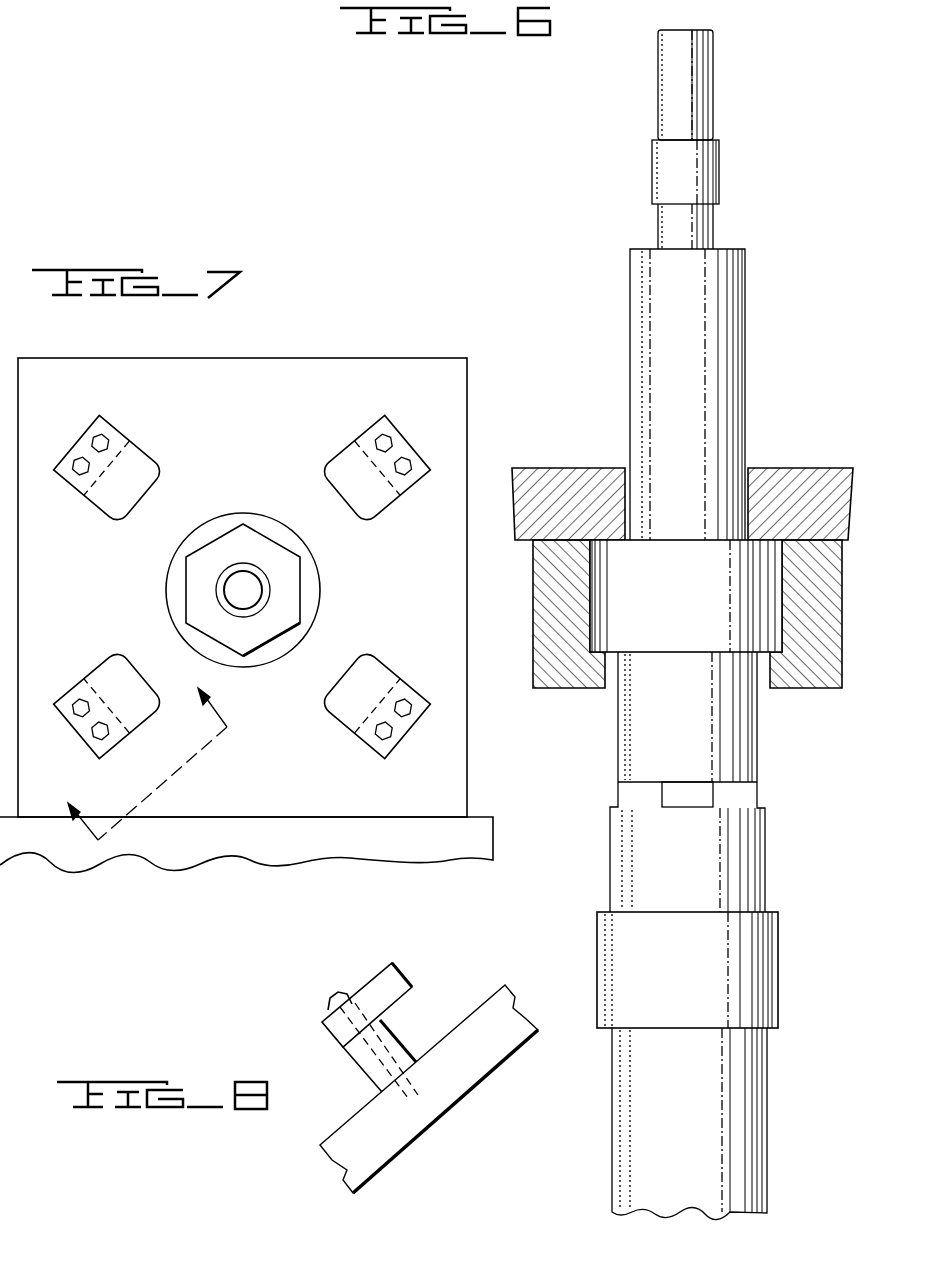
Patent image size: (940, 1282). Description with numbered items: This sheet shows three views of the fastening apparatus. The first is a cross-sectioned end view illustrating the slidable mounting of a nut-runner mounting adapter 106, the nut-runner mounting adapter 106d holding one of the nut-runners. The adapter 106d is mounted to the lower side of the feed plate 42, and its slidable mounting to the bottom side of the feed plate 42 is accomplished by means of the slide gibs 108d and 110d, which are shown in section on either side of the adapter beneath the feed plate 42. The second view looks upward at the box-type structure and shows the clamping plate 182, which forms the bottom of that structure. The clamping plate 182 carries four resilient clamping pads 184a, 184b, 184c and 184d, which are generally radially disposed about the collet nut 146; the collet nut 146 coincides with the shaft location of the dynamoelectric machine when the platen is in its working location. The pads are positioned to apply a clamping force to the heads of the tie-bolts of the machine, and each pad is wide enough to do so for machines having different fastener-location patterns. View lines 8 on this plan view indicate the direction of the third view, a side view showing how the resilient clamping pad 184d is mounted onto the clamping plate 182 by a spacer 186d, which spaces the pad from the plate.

In FIG. 6, the feed plate 42 is at (556, 468).
In FIG. 6, the nut-runner mounting adapter 106 is at (700, 613).
In FIG. 6, the nut-runner mounting adapter 106d is at (765, 862).
In FIG. 6, the slide gib 108d is at (588, 690).
In FIG. 6, the slide gib 110d is at (815, 690).
In FIG. 7, the clamping plate 182 is at (280, 356).
In FIG. 8, the clamping plate 182 is at (445, 1107).
In FIG. 7, the resilient clamping pad 184a is at (146, 450).
In FIG. 7, the resilient clamping pad 184b is at (338, 443).
In FIG. 7, the resilient clamping pad 184c is at (430, 667).
In FIG. 7, the resilient clamping pad 184d is at (88, 674).
In FIG. 8, the resilient clamping pad 184d is at (396, 963).
In FIG. 8, the spacer 186d is at (402, 1037).
In FIG. 7, the collet nut 146 is at (275, 590).
In FIG. 7, the view lines 8- 8 is at (137, 751).